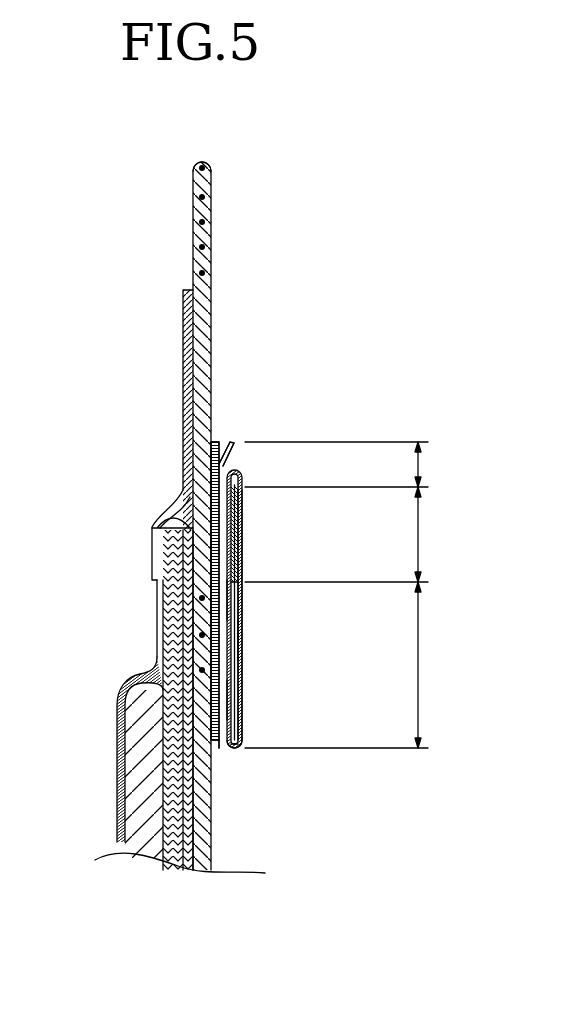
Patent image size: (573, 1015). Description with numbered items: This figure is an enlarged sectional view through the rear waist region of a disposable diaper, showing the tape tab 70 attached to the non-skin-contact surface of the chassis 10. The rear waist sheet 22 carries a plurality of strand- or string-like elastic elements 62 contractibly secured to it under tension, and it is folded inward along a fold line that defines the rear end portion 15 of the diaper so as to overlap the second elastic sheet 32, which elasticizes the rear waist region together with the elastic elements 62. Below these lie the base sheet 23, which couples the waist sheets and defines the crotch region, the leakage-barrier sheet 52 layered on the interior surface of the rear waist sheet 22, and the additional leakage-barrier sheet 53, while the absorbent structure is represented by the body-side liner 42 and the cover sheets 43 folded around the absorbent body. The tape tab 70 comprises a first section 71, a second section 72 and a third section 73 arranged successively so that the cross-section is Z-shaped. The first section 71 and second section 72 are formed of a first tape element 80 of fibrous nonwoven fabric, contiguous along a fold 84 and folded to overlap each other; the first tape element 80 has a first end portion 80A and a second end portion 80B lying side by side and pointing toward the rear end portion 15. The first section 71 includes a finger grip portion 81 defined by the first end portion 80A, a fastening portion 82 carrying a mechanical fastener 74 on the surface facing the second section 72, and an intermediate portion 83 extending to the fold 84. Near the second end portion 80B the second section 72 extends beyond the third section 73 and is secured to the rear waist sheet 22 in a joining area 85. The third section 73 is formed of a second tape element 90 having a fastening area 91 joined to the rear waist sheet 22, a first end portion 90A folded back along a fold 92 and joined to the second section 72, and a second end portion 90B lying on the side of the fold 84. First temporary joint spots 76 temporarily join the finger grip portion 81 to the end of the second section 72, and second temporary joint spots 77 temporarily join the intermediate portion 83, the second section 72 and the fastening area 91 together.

The chassis 10 is at (163, 150).
The rear end portion 15 is at (203, 163).
The rear waist sheet 22 is at (212, 205).
The base sheet 23 is at (170, 557).
The second elastic sheet 32 is at (183, 336).
The body-side liner 42 is at (120, 681).
The cover sheets 43 is at (160, 600).
The leakage-barrier sheet 52 is at (212, 859).
The additional leakage-barrier sheet 53 is at (175, 520).
The elastic elements 62 is at (206, 248).
The tape tab 70 is at (250, 432).
The first section 71 is at (246, 505).
The second section 72 is at (237, 742).
The third section 73 is at (242, 640).
The mechanical fastener 74 is at (233, 598).
The first temporary joint spots 76 is at (224, 462).
The second temporary joint spots 77 is at (234, 690).
The first tape element 80 is at (258, 768).
The first end portion 80A is at (232, 448).
The second end portion 80B is at (217, 443).
The finger grip portion 81 is at (426, 462).
The fastening portion 82 is at (426, 522).
The intermediate portion 83 is at (426, 665).
The fold 84 is at (217, 746).
The joining area 85 is at (188, 493).
The second tape element 90 is at (224, 613).
The first end portion 90A is at (235, 550).
The second end portion 90B is at (225, 752).
The fastening area 91 is at (226, 679).
The fold 92 is at (214, 462).